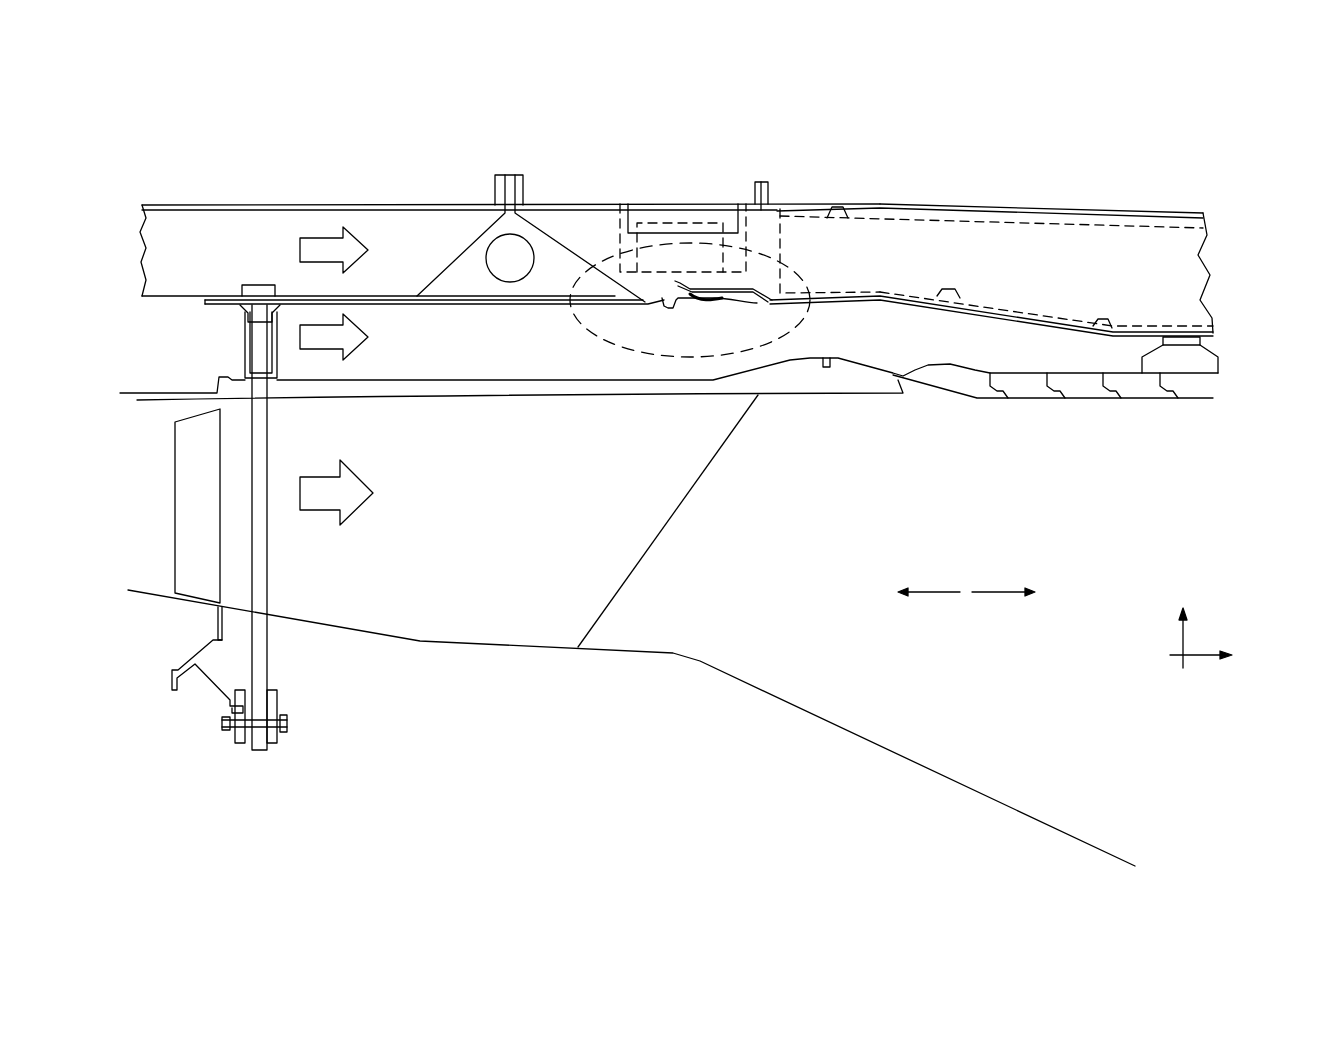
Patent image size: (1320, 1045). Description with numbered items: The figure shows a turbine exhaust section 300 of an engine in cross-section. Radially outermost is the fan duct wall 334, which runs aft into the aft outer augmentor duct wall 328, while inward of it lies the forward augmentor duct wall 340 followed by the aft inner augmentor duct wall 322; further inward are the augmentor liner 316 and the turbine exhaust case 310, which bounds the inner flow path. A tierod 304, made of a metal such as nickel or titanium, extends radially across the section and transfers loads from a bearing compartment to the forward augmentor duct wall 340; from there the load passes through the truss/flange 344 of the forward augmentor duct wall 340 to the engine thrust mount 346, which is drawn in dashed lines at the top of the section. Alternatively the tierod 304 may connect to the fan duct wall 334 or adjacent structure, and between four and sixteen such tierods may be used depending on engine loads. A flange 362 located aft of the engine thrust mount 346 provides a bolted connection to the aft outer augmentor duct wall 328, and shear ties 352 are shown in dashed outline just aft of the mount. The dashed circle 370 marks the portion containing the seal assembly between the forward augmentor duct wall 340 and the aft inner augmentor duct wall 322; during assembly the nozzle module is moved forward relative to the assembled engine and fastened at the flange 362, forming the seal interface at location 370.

The turbine exhaust section 300 is at (1228, 174).
The tierod 304 is at (268, 560).
The turbine exhaust case 310 is at (668, 517).
The augmentor liner 316 is at (963, 400).
The aft inner augmentor duct wall 322 is at (1020, 320).
The aft outer augmentor duct wall 328 is at (962, 203).
The fan duct wall 334 is at (246, 203).
The forward augmentor duct wall 340 is at (446, 292).
The truss/flange 344 is at (490, 236).
The engine thrust mount 346 is at (684, 222).
The shear ties 352 is at (783, 232).
The flange 362 is at (770, 192).
The seal assembly portion 370 is at (612, 347).